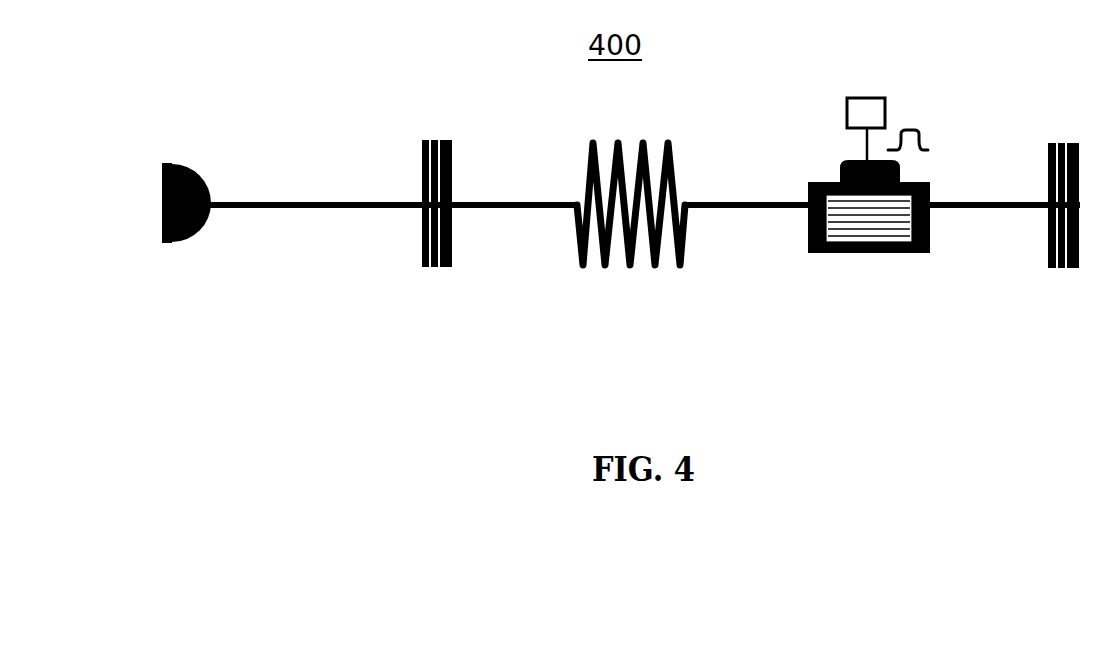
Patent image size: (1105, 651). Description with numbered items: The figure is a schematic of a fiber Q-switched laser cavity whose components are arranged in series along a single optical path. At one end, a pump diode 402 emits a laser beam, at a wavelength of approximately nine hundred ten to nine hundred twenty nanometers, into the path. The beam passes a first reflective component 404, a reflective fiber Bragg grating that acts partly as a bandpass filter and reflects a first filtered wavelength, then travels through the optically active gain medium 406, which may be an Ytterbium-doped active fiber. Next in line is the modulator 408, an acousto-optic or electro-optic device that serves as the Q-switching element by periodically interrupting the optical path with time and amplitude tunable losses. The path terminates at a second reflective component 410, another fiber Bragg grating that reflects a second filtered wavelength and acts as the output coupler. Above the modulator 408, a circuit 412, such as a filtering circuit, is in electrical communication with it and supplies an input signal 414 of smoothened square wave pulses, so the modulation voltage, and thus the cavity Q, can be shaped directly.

The pump diode 402 is at (173, 243).
The first reflective component 404 is at (426, 268).
The optically active (gain) medium 406 is at (600, 270).
The modulator 408 is at (862, 248).
The second reflective component 410 is at (1064, 270).
The circuit 412 is at (868, 95).
The input signal 414 is at (923, 120).